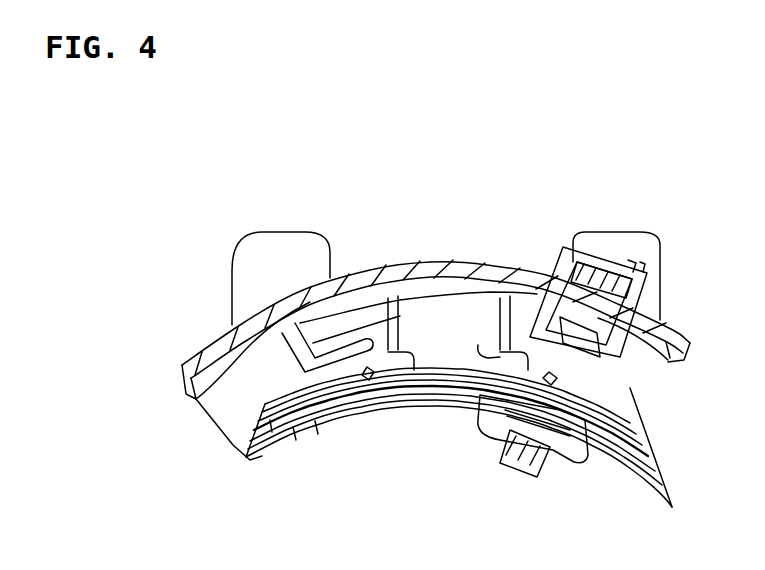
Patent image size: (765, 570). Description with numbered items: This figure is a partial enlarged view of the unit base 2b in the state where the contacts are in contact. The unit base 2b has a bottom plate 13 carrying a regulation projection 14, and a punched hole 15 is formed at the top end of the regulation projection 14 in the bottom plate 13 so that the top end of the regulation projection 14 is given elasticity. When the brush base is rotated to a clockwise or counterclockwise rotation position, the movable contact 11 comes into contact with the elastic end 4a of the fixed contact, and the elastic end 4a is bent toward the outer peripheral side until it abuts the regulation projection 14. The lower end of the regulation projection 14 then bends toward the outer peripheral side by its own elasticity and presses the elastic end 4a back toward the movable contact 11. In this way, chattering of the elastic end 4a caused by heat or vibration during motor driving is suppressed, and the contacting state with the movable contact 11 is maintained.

The unit base 2b is at (500, 262).
The bottom plate 13 is at (658, 322).
The regulation projection 14 is at (350, 343).
The punched hole 15 is at (388, 333).
The elastic end 4a is at (366, 381).
The movable contact 11 is at (554, 396).